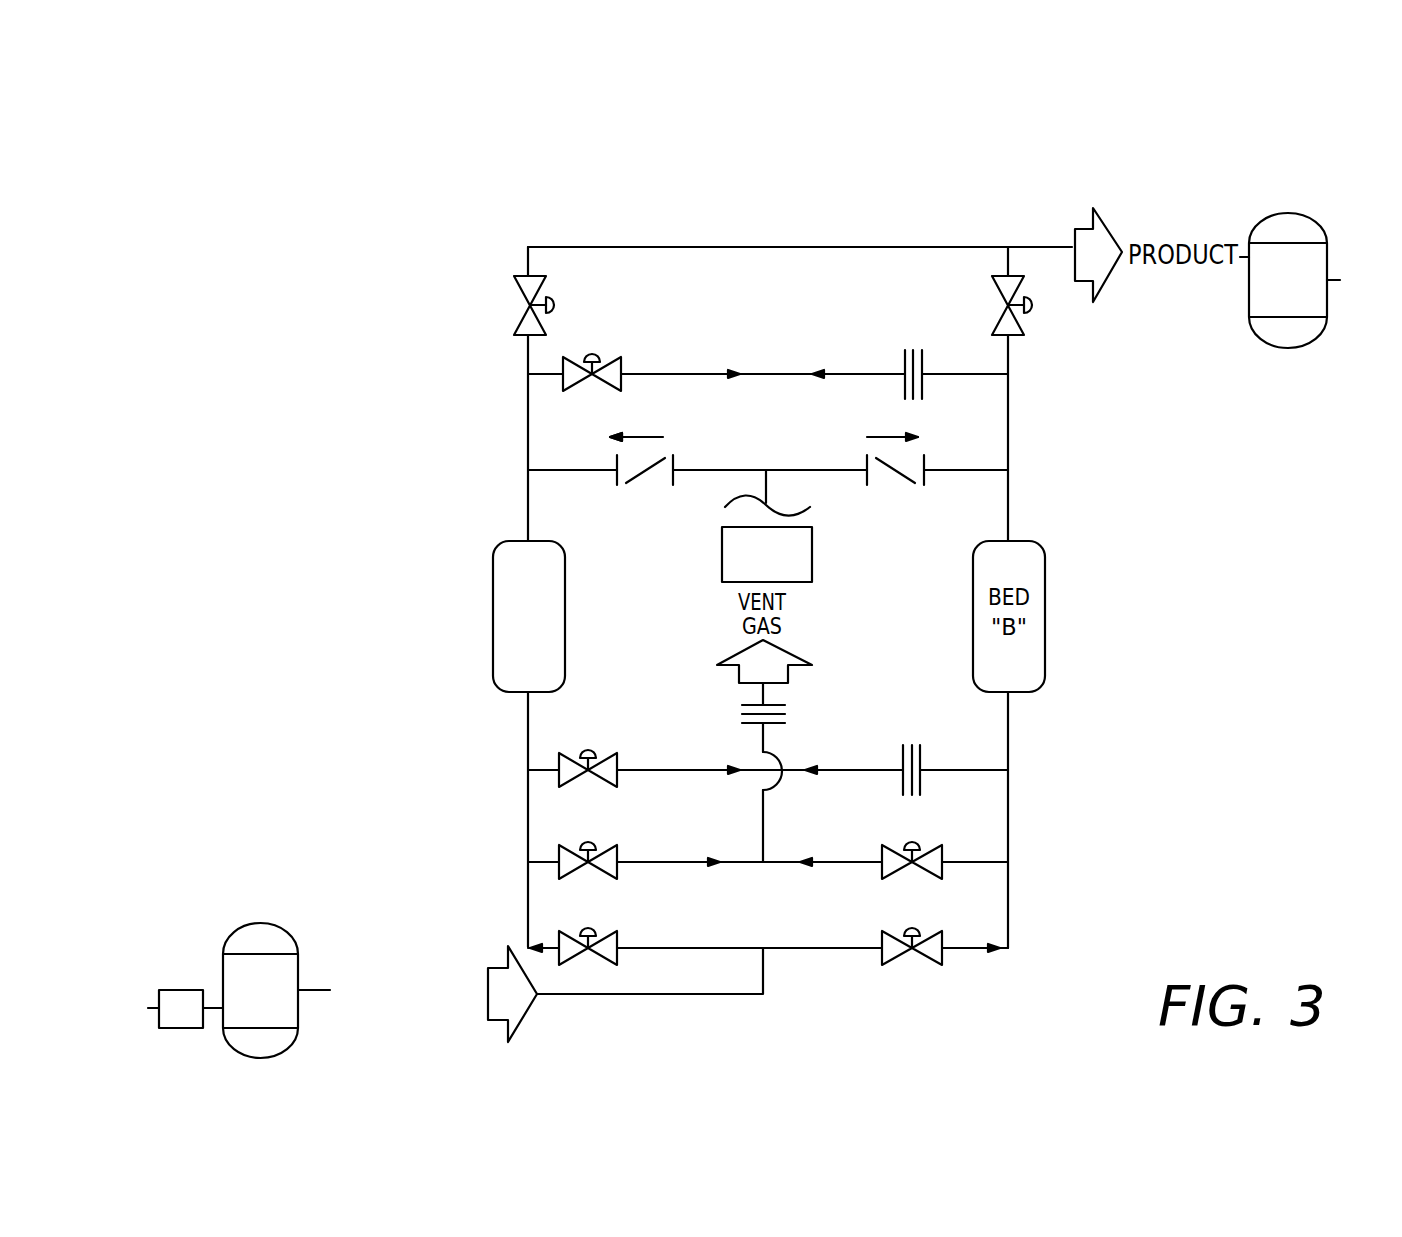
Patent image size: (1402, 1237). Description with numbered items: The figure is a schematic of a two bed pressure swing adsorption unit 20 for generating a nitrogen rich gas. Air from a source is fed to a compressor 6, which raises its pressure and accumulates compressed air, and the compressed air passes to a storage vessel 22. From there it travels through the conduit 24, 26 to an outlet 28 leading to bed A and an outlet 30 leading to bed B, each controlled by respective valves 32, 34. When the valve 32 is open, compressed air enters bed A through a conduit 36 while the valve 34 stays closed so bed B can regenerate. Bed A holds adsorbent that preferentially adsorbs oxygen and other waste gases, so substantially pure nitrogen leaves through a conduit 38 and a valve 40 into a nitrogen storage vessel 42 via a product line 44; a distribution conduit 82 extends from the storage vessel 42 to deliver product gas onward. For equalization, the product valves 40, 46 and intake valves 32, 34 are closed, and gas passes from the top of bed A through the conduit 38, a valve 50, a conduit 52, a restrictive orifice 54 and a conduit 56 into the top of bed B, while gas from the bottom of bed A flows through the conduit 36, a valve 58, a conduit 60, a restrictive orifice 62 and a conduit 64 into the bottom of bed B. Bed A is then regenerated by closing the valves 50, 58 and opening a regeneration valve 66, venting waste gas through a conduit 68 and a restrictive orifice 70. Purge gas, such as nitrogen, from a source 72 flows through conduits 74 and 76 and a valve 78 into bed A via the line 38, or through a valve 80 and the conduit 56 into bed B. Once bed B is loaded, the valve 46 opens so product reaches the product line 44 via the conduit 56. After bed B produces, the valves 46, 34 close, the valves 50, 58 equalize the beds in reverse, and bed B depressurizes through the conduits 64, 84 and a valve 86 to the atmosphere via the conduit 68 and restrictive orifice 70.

The compressor 6 is at (185, 1009).
The pressure swing adsorption unit 20 is at (483, 626).
The storage vessel 22 is at (260, 990).
The conduit 24 is at (310, 991).
The conduit 26 is at (766, 972).
The outlet 28 is at (747, 950).
The outlet 30 is at (865, 948).
The valve 32 is at (602, 912).
The valve 34 is at (925, 920).
The conduit 36 is at (528, 732).
The conduit 38 is at (528, 517).
The valve 40 is at (513, 305).
The nitrogen storage vessel 42 is at (1288, 280).
The product line 44 is at (810, 247).
The valve 46 is at (997, 305).
The valve 50 is at (612, 349).
The conduit 52 is at (763, 374).
The restrictive orifice 54 is at (923, 388).
The conduit 56 is at (1008, 498).
The valve 58 is at (596, 728).
The conduit 60 is at (788, 767).
The restrictive orifice 62 is at (914, 728).
The conduit 64 is at (1008, 743).
The regeneration valve 66 is at (593, 824).
The conduit 68 is at (763, 814).
The restrictive orifice 70 is at (777, 700).
The source 72 is at (823, 547).
The conduit 74 is at (766, 487).
The conduit 76 is at (840, 470).
The valve 78 is at (680, 454).
The valve 80 is at (936, 452).
The distribution conduit 82 is at (1338, 281).
The conduit 84 is at (998, 862).
The valve 86 is at (910, 836).